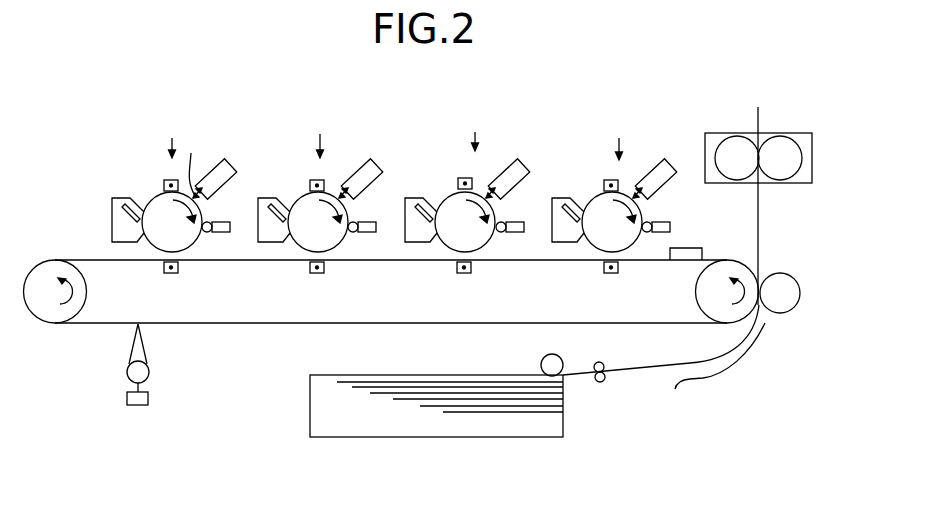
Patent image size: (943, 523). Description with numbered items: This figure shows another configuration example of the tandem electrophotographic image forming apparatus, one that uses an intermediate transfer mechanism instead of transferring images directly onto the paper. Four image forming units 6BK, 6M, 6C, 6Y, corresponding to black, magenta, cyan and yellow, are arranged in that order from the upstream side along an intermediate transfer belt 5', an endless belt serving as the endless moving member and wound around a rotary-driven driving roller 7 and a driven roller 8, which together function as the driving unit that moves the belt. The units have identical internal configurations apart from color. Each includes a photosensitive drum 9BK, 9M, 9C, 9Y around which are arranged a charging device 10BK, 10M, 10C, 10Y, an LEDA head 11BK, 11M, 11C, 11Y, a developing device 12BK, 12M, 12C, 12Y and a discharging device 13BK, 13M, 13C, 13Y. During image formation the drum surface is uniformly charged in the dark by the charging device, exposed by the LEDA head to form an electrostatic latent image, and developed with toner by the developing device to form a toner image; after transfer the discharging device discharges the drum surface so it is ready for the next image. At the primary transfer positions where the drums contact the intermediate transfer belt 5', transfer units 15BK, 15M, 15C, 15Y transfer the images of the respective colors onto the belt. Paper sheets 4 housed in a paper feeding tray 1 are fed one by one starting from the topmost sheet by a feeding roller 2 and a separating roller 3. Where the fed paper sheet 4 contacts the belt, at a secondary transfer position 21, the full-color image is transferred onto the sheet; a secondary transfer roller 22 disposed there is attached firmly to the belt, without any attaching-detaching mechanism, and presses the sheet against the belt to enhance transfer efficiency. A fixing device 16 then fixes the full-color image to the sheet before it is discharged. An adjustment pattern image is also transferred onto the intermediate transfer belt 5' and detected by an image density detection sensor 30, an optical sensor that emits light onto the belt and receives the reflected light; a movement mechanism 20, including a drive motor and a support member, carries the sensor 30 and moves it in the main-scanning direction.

The paper feeding tray 1 is at (437, 440).
The feeding roller 2 is at (545, 355).
The separating roller 3 is at (603, 382).
The paper sheet 4 is at (480, 375).
The intermediate transfer belt 5' is at (391, 307).
The image forming unit 6Y is at (208, 136).
The image forming unit 6C is at (357, 136).
The image forming unit 6M is at (509, 131).
The image forming unit 6BK is at (656, 137).
The driving roller 7 is at (38, 320).
The driven roller 8 is at (695, 291).
The photosensitive drum 9Y is at (189, 247).
The photosensitive drum 9C is at (335, 247).
The photosensitive drum 9M is at (482, 247).
The photosensitive drum 9BK is at (629, 247).
The charging device 10Y is at (165, 180).
The charging device 10C is at (313, 180).
The charging device 10M is at (462, 178).
The charging device 10BK is at (608, 180).
The LEDA head 11Y is at (228, 162).
The LEDA head 11C is at (376, 165).
The LEDA head 11M is at (525, 163).
The LEDA head 11BK is at (665, 171).
The developing device 12Y is at (218, 222).
The developing device 12C is at (365, 222).
The developing device 12M is at (515, 221).
The developing device 12BK is at (659, 222).
The discharging device 13Y is at (112, 199).
The discharging device 13C is at (258, 198).
The discharging device 13M is at (405, 198).
The discharging device 13BK is at (552, 198).
The transfer unit 15Y is at (173, 283).
The transfer unit 15C is at (315, 273).
The transfer unit 15M is at (462, 273).
The transfer unit 15BK is at (609, 273).
The fixing device 16 is at (793, 133).
The movement mechanism 20 is at (149, 396).
The secondary transfer position 21 is at (748, 355).
The secondary transfer roller 22 is at (793, 280).
The image density detection sensor 30 is at (149, 369).